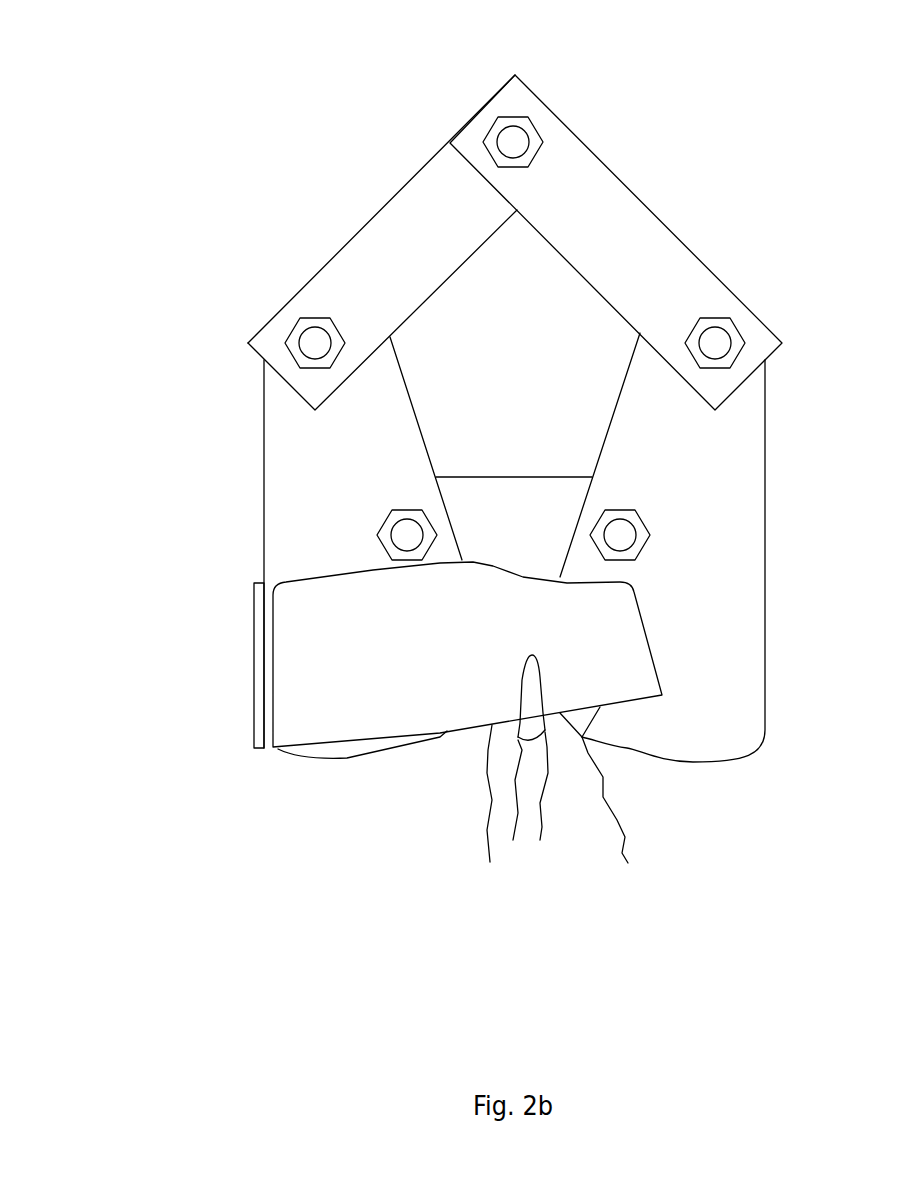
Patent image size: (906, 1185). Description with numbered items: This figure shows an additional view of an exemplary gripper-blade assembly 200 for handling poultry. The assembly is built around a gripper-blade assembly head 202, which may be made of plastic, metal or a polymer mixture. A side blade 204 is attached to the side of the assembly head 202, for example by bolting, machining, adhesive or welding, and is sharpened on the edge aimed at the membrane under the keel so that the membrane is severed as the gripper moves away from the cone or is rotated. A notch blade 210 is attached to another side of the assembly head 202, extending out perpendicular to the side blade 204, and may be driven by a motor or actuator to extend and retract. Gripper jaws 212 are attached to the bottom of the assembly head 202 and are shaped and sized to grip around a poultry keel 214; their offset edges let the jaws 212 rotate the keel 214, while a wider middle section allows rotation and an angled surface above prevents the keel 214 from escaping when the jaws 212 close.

The gripper-blade assembly 200 is at (253, 82).
The gripper-blade assembly head 202 is at (218, 523).
The side blade 204 is at (254, 693).
The notch blade 210 is at (358, 708).
The gripper jaws 212 is at (442, 740).
The poultry keel 214 is at (533, 700).